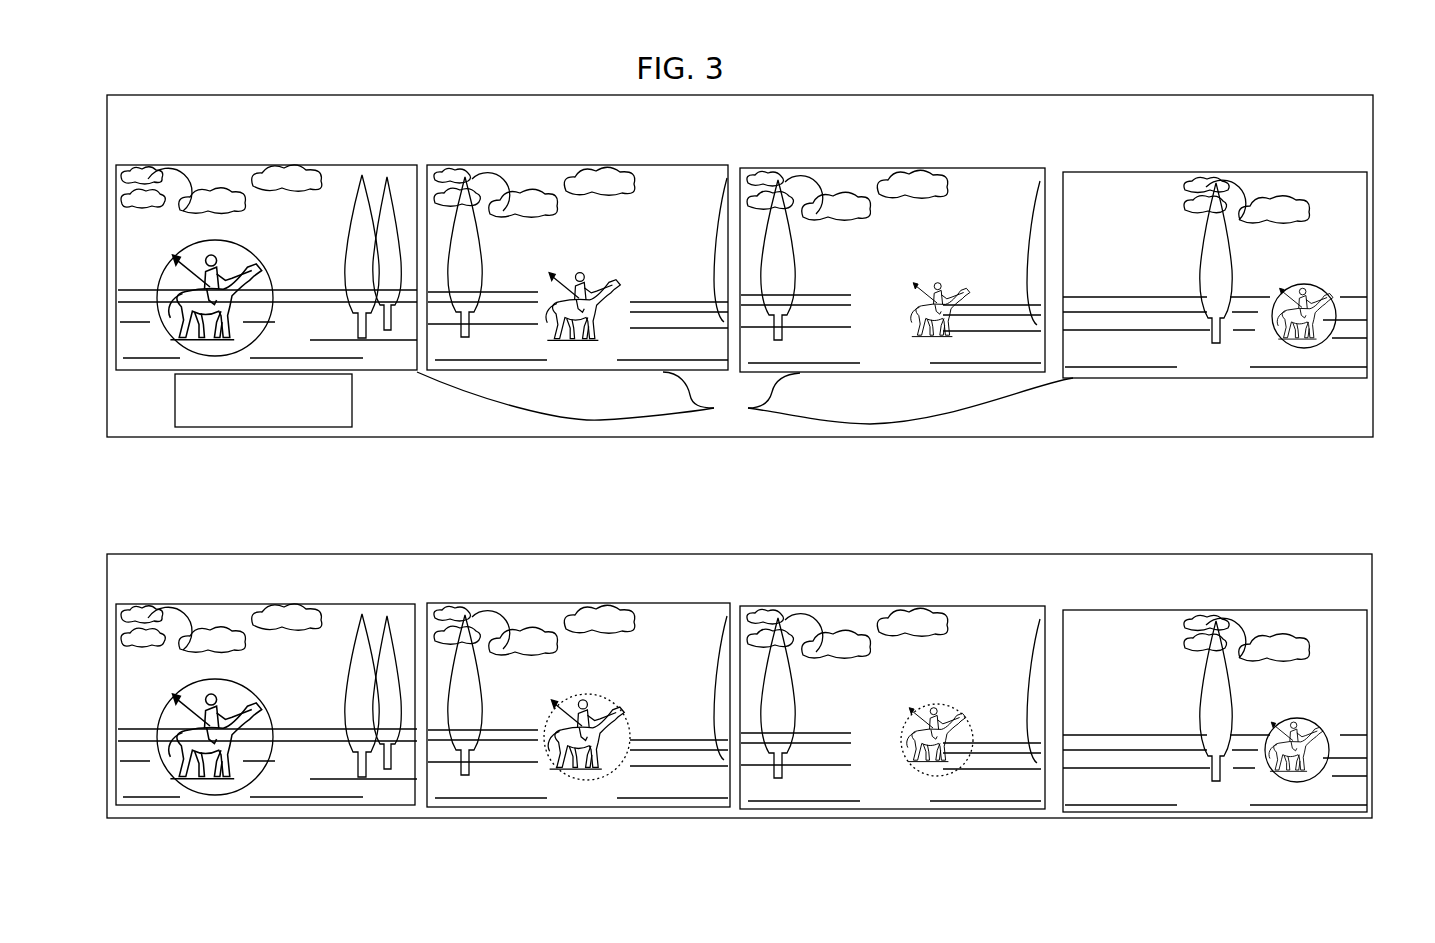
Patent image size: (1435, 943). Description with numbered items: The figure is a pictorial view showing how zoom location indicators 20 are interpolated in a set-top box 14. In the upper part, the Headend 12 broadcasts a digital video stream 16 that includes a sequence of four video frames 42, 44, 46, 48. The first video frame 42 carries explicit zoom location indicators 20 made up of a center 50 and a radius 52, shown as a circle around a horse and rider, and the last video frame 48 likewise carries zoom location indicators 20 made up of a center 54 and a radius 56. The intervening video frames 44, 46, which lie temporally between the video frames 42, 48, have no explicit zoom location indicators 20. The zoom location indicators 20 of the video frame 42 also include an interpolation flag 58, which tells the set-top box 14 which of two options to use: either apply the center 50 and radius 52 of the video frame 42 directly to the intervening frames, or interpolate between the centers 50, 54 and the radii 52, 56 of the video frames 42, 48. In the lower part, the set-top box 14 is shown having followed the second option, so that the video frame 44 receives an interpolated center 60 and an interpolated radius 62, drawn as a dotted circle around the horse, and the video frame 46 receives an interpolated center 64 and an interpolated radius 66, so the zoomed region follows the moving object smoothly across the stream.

The Headend 12 is at (347, 95).
The set-top box 14 is at (197, 554).
The digital video stream 16 is at (745, 398).
The zoom location indicators 20 is at (168, 256).
The video frame 42 is at (359, 165).
The intervening video frame 44 is at (507, 165).
The intervening video frame 46 is at (806, 168).
The video frame 48 is at (1119, 172).
The center 50 is at (170, 300).
The radius 52 is at (196, 282).
The center 54 is at (1303, 343).
The radius 56 is at (1298, 290).
The interpolation flag 58 is at (356, 409).
The interpolated center 60 is at (552, 722).
The interpolated radius 62 is at (580, 698).
The interpolated center 64 is at (910, 726).
The interpolated radius 66 is at (933, 716).